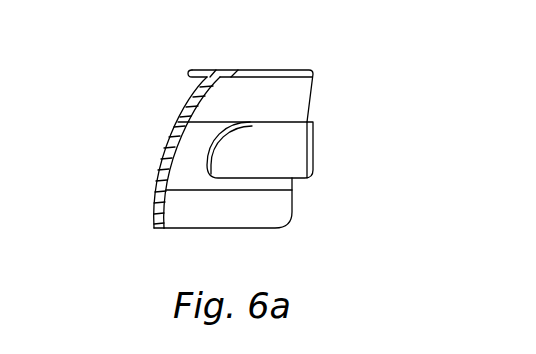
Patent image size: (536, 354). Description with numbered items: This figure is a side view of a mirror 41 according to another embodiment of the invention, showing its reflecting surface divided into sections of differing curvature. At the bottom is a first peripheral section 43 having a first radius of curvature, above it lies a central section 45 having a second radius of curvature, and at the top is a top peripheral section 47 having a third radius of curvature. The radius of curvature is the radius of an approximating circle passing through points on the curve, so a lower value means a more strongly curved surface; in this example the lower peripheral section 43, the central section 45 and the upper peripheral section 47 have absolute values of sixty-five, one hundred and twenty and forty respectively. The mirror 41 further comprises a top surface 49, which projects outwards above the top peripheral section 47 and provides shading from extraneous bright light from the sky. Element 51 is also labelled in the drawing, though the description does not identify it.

The mirror 41 is at (343, 37).
The first peripheral section 43 is at (170, 207).
The central section 45 is at (182, 160).
The top peripheral section 47 is at (193, 105).
The top surface 49 is at (202, 71).
The top plate 51 is at (263, 69).